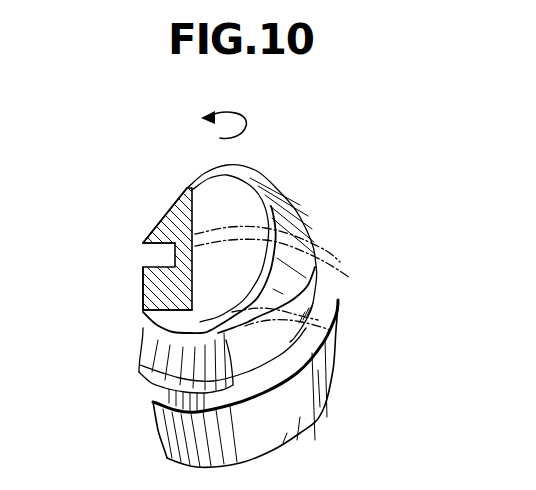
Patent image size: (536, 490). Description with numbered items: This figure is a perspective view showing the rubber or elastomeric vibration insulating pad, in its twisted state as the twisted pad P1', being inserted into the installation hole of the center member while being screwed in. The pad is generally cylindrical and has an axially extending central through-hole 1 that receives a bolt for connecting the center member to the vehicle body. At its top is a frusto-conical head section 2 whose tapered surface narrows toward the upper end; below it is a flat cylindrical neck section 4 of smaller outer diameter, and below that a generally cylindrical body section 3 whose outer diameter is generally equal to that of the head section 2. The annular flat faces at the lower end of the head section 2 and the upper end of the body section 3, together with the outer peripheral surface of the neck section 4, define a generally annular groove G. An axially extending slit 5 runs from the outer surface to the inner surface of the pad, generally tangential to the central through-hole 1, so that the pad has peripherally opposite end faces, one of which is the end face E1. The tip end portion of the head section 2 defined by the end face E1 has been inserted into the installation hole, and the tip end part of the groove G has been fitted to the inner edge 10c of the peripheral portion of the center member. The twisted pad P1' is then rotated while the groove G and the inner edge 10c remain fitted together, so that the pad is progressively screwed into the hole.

The axially extending central through-hole 1 is at (208, 200).
The twisted pad P1' is at (309, 205).
The frusto-conical head section 2 is at (161, 222).
The annular groove G is at (150, 247).
The flat cylindrical neck section 4 is at (148, 257).
The end face E1 is at (141, 290).
The generally cylindrical body section 3 is at (143, 306).
The axially extending slit 5 is at (143, 313).
The inner edge 10c is at (337, 270).